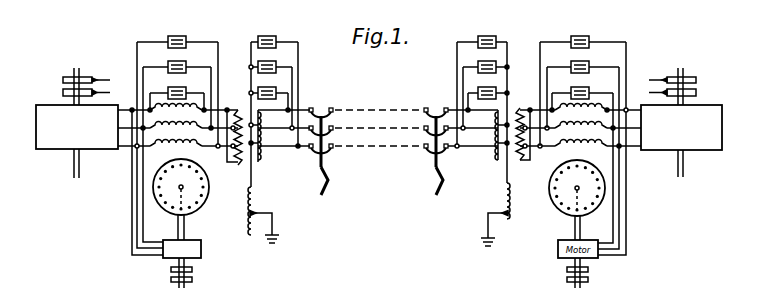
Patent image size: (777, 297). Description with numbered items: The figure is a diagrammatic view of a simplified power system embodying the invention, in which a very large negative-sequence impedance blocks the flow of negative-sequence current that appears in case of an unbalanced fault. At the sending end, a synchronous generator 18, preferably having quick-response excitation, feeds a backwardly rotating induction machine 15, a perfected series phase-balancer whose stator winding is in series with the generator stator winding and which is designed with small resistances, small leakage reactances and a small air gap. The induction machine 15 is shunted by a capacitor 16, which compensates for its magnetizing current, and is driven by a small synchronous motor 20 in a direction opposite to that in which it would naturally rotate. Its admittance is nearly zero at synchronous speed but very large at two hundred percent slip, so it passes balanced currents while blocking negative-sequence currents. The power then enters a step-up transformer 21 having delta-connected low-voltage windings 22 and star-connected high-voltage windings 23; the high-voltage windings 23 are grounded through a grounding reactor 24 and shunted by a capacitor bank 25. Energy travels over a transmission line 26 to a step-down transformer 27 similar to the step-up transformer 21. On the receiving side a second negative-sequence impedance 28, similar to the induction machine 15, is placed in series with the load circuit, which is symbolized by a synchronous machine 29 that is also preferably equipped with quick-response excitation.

The induction machine 15 is at (206, 198).
The capacitor 16 is at (188, 36).
The synchronous generator 18 is at (60, 150).
The synchronous motor 20 is at (203, 253).
The step-up transformer 21 is at (252, 165).
The delta-connected low-voltage windings 22 is at (240, 166).
The star-connected high-voltage windings 23 is at (272, 116).
The grounding reactor 24 is at (258, 203).
The capacitor bank 25 is at (278, 36).
The transmission line 26 is at (369, 146).
The step-down transformer 27 is at (513, 163).
The negative-sequence impedance 28 is at (605, 180).
The synchronous machine 29 is at (703, 150).